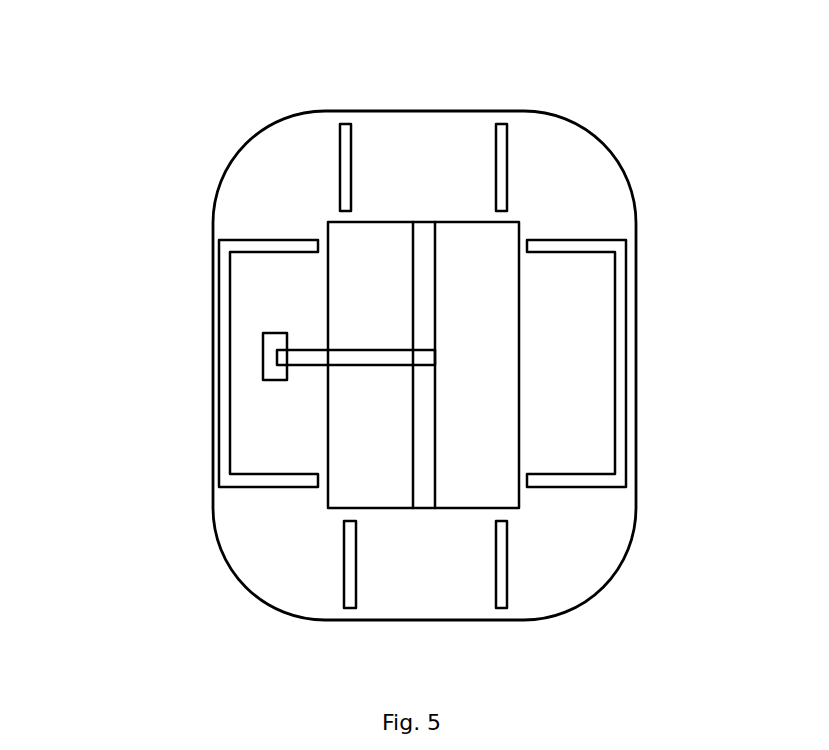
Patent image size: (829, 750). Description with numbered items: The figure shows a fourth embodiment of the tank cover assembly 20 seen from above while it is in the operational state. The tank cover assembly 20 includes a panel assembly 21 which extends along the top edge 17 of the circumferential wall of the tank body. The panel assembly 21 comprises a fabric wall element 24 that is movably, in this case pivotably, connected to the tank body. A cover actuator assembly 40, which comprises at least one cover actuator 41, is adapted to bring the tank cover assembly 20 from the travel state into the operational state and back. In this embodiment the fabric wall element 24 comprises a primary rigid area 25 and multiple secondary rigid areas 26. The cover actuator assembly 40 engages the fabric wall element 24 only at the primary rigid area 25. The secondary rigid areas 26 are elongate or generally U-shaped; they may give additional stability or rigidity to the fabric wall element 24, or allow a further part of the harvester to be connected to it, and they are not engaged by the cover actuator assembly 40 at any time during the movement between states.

The tank cover assembly 20 is at (202, 123).
The panel assembly 21 is at (621, 148).
The top edge 17 is at (520, 393).
The cover actuator assembly 40 is at (428, 302).
The cover actuator 41 is at (358, 360).
The primary rigid area 25 is at (278, 370).
The fabric wall element 24 is at (246, 283).
The secondary rigid areas 26 is at (340, 176).